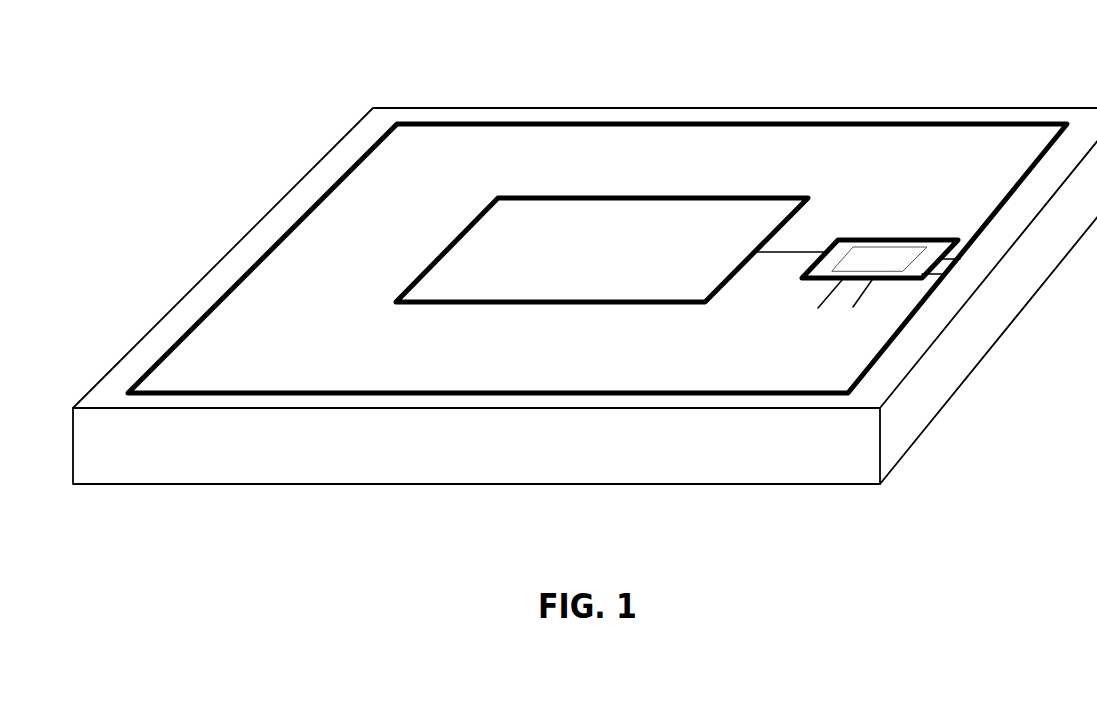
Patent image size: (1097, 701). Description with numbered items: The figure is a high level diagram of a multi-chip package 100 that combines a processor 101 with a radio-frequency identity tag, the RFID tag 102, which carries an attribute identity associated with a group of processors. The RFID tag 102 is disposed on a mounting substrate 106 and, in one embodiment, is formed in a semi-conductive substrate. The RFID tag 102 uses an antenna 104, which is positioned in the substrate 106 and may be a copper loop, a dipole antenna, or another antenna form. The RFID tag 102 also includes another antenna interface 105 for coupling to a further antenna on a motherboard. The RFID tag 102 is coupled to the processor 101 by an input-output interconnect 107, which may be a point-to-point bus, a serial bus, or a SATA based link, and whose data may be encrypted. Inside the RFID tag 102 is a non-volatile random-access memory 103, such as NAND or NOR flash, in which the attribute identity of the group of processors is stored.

The multi-chip package 100 is at (676, 41).
The processor 101 is at (498, 250).
The RFID tag 102 is at (840, 238).
The non-volatile random-access memory 103 is at (878, 258).
The antenna 104 is at (467, 124).
The antenna interface 105 is at (838, 297).
The mounting substrate 106 is at (285, 192).
The input-output interconnect 107 is at (787, 253).